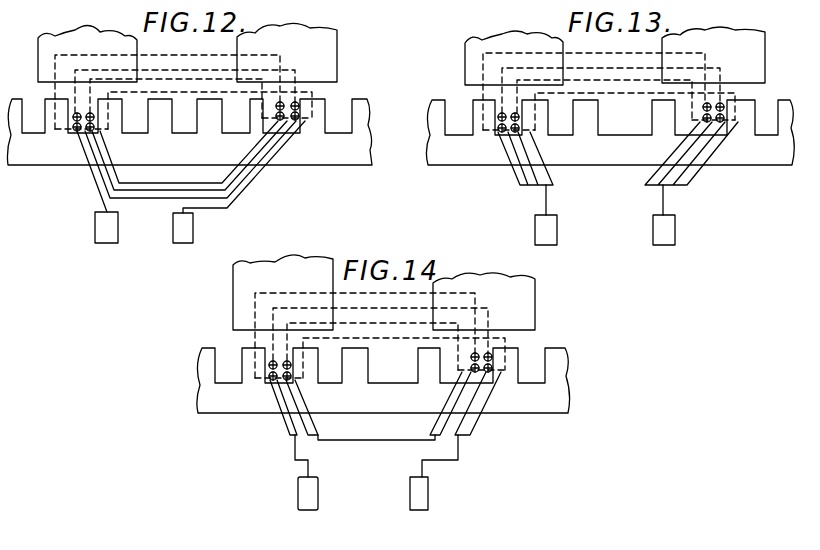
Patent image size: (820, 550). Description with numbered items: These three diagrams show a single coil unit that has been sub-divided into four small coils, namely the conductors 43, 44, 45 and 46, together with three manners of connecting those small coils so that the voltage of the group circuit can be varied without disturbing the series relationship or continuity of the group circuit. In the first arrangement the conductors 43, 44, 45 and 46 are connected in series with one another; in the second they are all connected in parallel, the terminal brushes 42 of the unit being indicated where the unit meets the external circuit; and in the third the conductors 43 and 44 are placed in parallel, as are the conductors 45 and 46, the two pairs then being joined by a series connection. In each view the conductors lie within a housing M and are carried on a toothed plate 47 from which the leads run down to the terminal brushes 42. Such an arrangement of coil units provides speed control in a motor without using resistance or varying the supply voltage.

In FIG. 12, the housing (motor/module housing) M is at (458, 48).
In FIG. 13, the housing (motor/module housing) M is at (570, 56).
In FIG. 14, the housing (motor/module housing) M is at (433, 284).
In FIG. 12, the terminal brushes 42 is at (173, 230).
In FIG. 13, the terminal brushes 42 is at (653, 232).
In FIG. 14, the terminal brushes 42 is at (410, 492).
In FIG. 12, the conductor 43 is at (243, 58).
In FIG. 13, the conductor 43 is at (670, 68).
In FIG. 14, the conductor 43 is at (442, 300).
In FIG. 12, the conductor 44 is at (260, 72).
In FIG. 13, the conductor 44 is at (692, 78).
In FIG. 14, the conductor 44 is at (458, 320).
In FIG. 12, the conductor 45 is at (285, 80).
In FIG. 13, the conductor 45 is at (717, 100).
In FIG. 14, the conductor 45 is at (483, 330).
In FIG. 12, the conductor 46 is at (295, 80).
In FIG. 13, the conductor 46 is at (722, 87).
In FIG. 14, the conductor 46 is at (494, 326).
In FIG. 12, the toothed mounting plate (comb) 47 is at (363, 163).
In FIG. 13, the toothed mounting plate (comb) 47 is at (781, 163).
In FIG. 14, the toothed mounting plate (comb) 47 is at (556, 418).